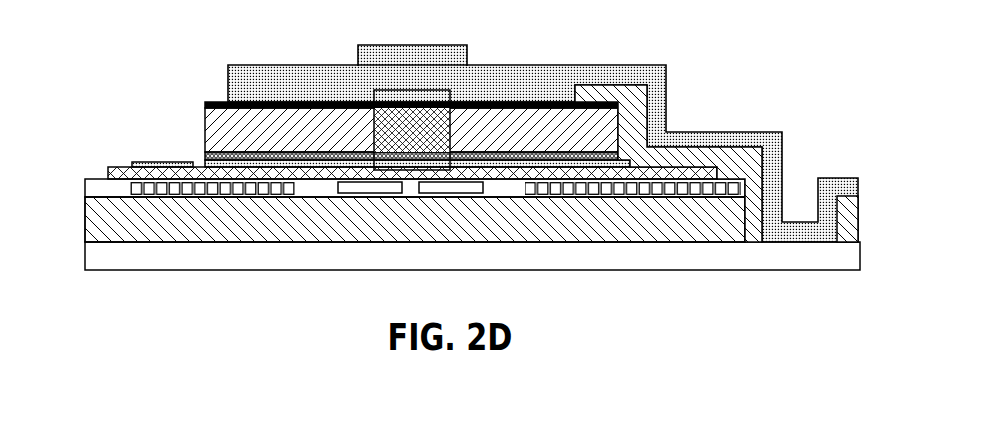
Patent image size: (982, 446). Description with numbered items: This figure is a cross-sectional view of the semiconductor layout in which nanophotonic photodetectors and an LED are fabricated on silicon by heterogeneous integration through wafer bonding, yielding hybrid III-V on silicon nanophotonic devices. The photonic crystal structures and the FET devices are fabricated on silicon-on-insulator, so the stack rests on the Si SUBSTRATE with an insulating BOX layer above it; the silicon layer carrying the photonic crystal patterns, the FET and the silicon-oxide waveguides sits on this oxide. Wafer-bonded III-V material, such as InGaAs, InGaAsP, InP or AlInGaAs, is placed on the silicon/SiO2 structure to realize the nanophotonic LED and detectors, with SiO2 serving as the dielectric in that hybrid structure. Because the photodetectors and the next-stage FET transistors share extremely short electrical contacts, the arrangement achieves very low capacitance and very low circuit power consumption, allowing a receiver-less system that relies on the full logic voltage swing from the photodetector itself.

The III-V material III-V is at (412, 130).
The element SiO2 is at (716, 163).
The buried oxide layer BOX is at (415, 219).
The silicon substrate Si SUBSTRATE is at (472, 256).